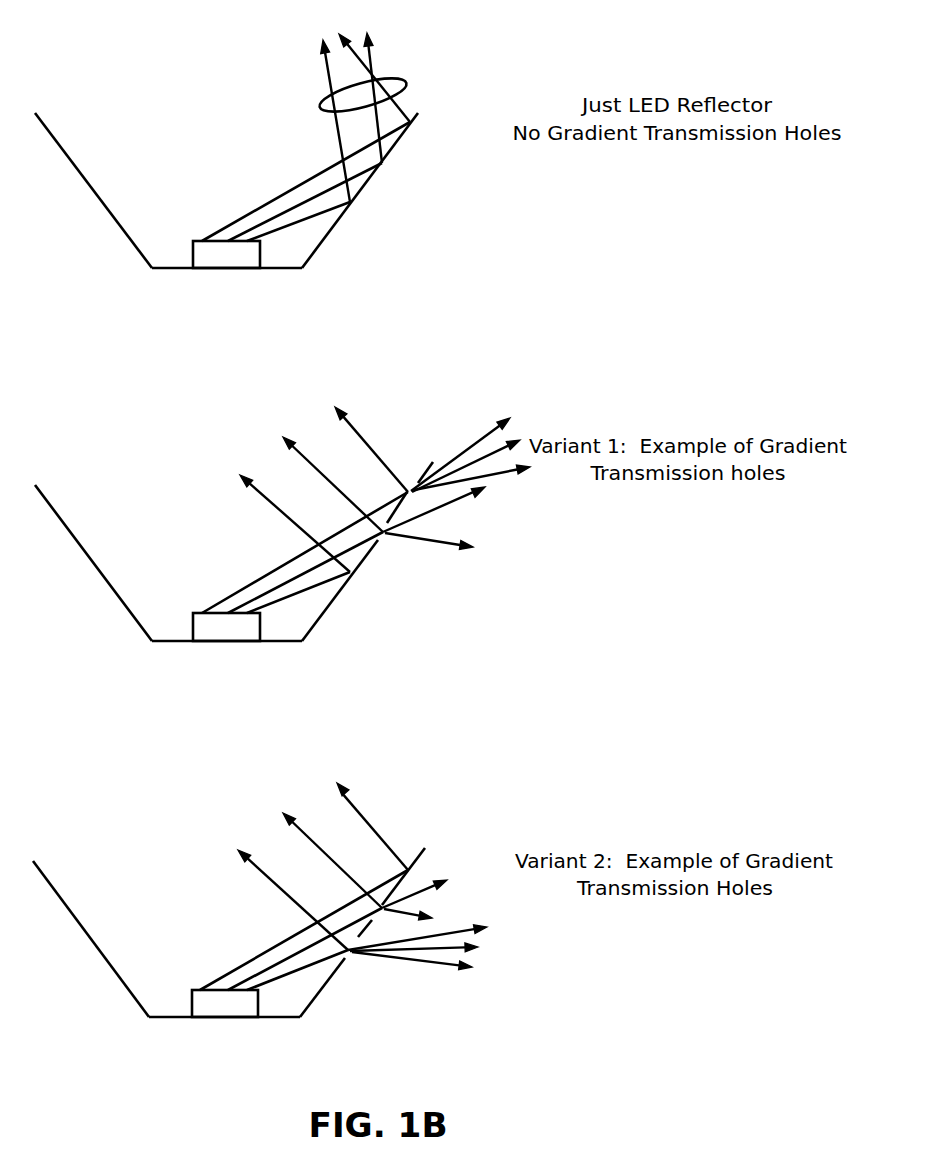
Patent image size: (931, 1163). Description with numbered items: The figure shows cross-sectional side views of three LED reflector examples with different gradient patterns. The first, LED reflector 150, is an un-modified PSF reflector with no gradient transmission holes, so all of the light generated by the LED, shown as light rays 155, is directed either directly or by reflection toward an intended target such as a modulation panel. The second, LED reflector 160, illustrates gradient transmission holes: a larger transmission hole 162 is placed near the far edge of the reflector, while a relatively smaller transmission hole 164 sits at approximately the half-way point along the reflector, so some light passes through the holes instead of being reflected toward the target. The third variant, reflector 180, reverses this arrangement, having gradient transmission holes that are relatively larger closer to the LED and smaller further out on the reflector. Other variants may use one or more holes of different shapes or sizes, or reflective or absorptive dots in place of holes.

The LED reflector 150 is at (362, 227).
The light rays 155 is at (405, 82).
The LED reflector 160 is at (372, 594).
The larger transmission hole 162 is at (432, 500).
The smaller transmission hole 164 is at (382, 537).
The reflector 180 is at (364, 971).